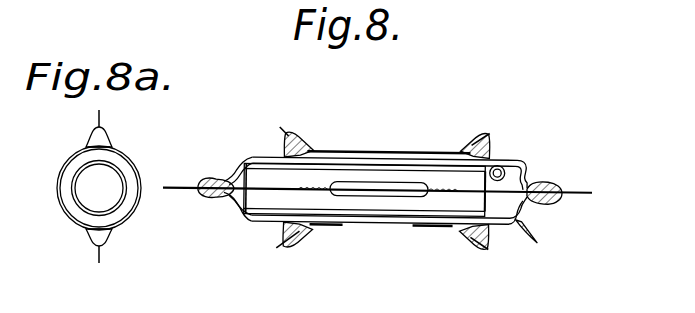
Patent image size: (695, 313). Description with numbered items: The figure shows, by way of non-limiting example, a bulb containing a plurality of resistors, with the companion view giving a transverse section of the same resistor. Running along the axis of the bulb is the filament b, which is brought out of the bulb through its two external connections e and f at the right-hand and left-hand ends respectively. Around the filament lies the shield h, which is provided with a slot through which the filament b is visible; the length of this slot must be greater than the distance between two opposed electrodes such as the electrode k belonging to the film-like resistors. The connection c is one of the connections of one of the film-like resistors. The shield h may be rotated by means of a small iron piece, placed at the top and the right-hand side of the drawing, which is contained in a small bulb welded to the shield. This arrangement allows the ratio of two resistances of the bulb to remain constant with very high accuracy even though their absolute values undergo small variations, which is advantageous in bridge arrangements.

The filament b is at (374, 197).
The connection of a film-like resistor c is at (487, 248).
The external connection of the filament e is at (584, 196).
The external connection of the filament f is at (174, 191).
The shield h is at (325, 213).
The electrode k is at (440, 150).